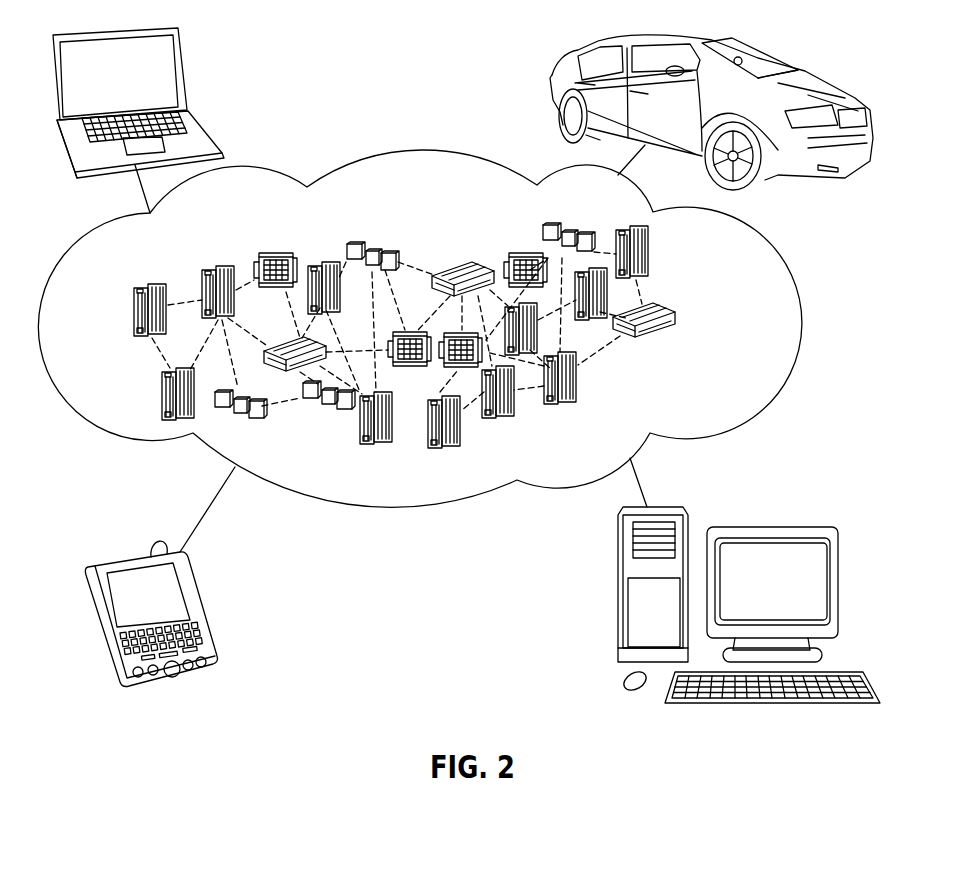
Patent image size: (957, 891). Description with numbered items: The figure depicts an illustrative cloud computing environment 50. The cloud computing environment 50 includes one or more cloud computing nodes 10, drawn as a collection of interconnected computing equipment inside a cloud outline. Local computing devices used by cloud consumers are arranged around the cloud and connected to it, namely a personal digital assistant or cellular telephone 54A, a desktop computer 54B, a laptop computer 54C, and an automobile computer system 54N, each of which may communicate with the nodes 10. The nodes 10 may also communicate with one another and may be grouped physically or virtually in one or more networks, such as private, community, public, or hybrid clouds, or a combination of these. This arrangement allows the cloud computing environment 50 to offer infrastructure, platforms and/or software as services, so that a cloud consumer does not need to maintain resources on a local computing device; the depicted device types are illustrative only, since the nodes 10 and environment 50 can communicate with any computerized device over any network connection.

The cloud computing nodes 10 is at (762, 365).
The cloud computing environment 50 is at (772, 255).
The personal digital assistant (PDA) or cellular telephone 54A is at (202, 607).
The desktop computer 54B is at (773, 527).
The laptop computer 54C is at (183, 72).
The automobile computer system 54N is at (550, 97).